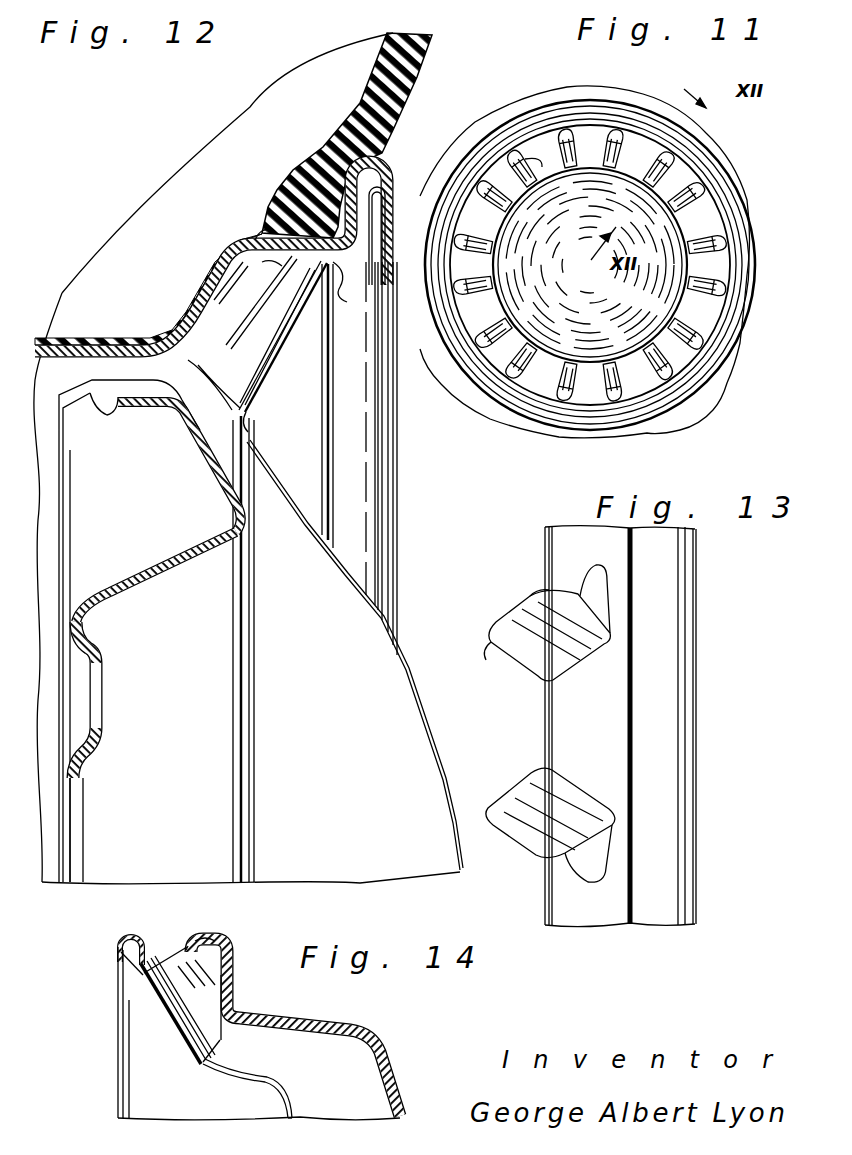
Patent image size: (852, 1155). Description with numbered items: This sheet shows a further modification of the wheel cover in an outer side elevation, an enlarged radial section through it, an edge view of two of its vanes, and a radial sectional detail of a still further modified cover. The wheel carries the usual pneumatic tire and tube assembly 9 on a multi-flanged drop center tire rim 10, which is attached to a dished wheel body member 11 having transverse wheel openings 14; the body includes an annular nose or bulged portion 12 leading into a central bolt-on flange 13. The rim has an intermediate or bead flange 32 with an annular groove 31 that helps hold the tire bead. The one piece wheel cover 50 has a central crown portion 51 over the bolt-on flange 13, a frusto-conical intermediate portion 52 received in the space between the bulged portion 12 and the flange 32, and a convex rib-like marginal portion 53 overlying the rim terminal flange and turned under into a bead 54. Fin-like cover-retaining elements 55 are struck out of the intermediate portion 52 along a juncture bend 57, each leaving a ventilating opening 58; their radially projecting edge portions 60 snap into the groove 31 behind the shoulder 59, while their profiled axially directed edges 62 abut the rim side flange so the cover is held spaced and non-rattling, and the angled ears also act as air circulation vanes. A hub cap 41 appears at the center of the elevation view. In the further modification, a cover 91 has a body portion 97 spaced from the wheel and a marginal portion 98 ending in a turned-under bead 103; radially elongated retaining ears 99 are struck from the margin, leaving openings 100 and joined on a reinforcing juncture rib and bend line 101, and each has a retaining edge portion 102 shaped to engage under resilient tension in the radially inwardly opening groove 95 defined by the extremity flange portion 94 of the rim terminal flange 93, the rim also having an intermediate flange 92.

In FIG. 12, the pneumatic tire and tube assembly 9 is at (428, 80).
In FIG. 11, the pneumatic tire and tube assembly 9 is at (512, 108).
In FIG. 12, the tire rim 10 is at (393, 157).
In FIG. 11, the tire rim 10 is at (640, 112).
In FIG. 12, the wheel body member 11 is at (197, 443).
In FIG. 12, the annular nose or bulged portion 12 is at (232, 528).
In FIG. 12, the bolt-on flange 13 is at (102, 640).
In FIG. 12, the wheel openings 14 is at (110, 365).
In FIG. 12, the annular groove 31 is at (237, 290).
In FIG. 12, the intermediate or bead flange 32 is at (348, 289).
In FIG. 11, the hub cap 41 is at (542, 167).
In FIG. 12, the wheel cover 50 is at (450, 758).
In FIG. 11, the wheel cover 50 is at (724, 178).
In FIG. 12, the central crown portion 51 is at (425, 712).
In FIG. 11, the central crown portion 51 is at (581, 291).
In FIG. 12, the intermediate portion 52 is at (294, 462).
In FIG. 11, the intermediate portion 52 is at (706, 217).
In FIG. 13, the intermediate portion 52 is at (603, 727).
In FIG. 12, the marginal portion 53 is at (375, 512).
In FIG. 11, the marginal portion 53 is at (689, 164).
In FIG. 13, the marginal portion 53 is at (657, 672).
In FIG. 12, the reinforcing and rigidifying bead 54 is at (387, 197).
In FIG. 13, the reinforcing and rigidifying bead 54 is at (684, 628).
In FIG. 12, the cover-retaining elements 55 is at (266, 337).
In FIG. 11, the cover-retaining elements 55 is at (720, 275).
In FIG. 13, the cover-retaining elements 55 is at (533, 652).
In FIG. 12, the juncture bend 57 is at (272, 372).
In FIG. 13, the juncture bend 57 is at (592, 662).
In FIG. 12, the opening 58 is at (252, 414).
In FIG. 13, the opening 58 is at (594, 586).
In FIG. 12, the shoulder 59 is at (268, 263).
In FIG. 12, the edge portion 60 is at (262, 230).
In FIG. 13, the edge portion 60 is at (559, 588).
In FIG. 12, the profiled edges 62 is at (206, 372).
In FIG. 13, the profiled edges 62 is at (487, 649).
In FIG. 14, the cover 91 is at (280, 1108).
In FIG. 14, the intermediate flange 92 is at (313, 1020).
In FIG. 14, the terminal flange 93 is at (236, 982).
In FIG. 14, the extremity flange portion 94 is at (188, 935).
In FIG. 14, the groove 95 is at (192, 984).
In FIG. 14, the body portion 97 is at (278, 1103).
In FIG. 14, the marginal portion 98 is at (120, 984).
In FIG. 14, the retaining ears 99 is at (220, 1036).
In FIG. 14, the opening 100 is at (143, 992).
In FIG. 14, the reinforcing juncture rib and bend line 101 is at (177, 1035).
In FIG. 14, the retaining edge portion 102 is at (212, 948).
In FIG. 14, the reinforcing and rigidifying bead 103 is at (143, 950).